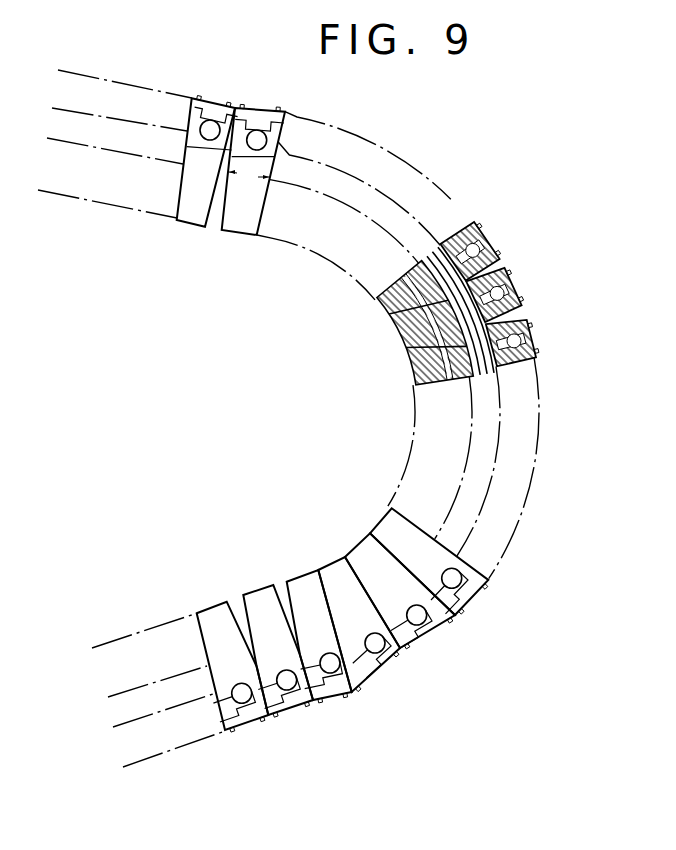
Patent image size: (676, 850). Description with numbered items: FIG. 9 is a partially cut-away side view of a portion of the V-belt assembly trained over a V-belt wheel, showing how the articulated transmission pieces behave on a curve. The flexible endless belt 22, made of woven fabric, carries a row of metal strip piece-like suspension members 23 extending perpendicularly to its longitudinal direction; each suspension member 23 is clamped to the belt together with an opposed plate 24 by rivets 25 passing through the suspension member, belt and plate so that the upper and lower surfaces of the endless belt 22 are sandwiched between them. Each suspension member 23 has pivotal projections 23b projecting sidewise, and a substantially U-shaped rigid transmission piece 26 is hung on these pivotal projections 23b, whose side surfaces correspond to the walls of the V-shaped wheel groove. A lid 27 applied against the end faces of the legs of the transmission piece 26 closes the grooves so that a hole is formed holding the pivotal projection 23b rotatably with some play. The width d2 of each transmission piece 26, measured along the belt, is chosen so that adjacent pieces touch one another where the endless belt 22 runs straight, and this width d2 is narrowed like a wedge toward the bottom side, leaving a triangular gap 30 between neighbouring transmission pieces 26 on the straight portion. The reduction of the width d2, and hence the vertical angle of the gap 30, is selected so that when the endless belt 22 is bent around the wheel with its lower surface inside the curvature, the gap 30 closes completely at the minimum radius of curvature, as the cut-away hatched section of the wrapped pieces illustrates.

The endless belt 22 is at (433, 247).
The suspension member 23 is at (466, 254).
The pivotal projection 23b is at (264, 132).
The opposed plate 24 is at (386, 298).
The rivet 25 is at (523, 294).
The transmission piece 26 is at (390, 314).
The lid 27 is at (270, 146).
The triangular gap 30 is at (233, 600).
The width of the transmission piece d2 is at (249, 183).